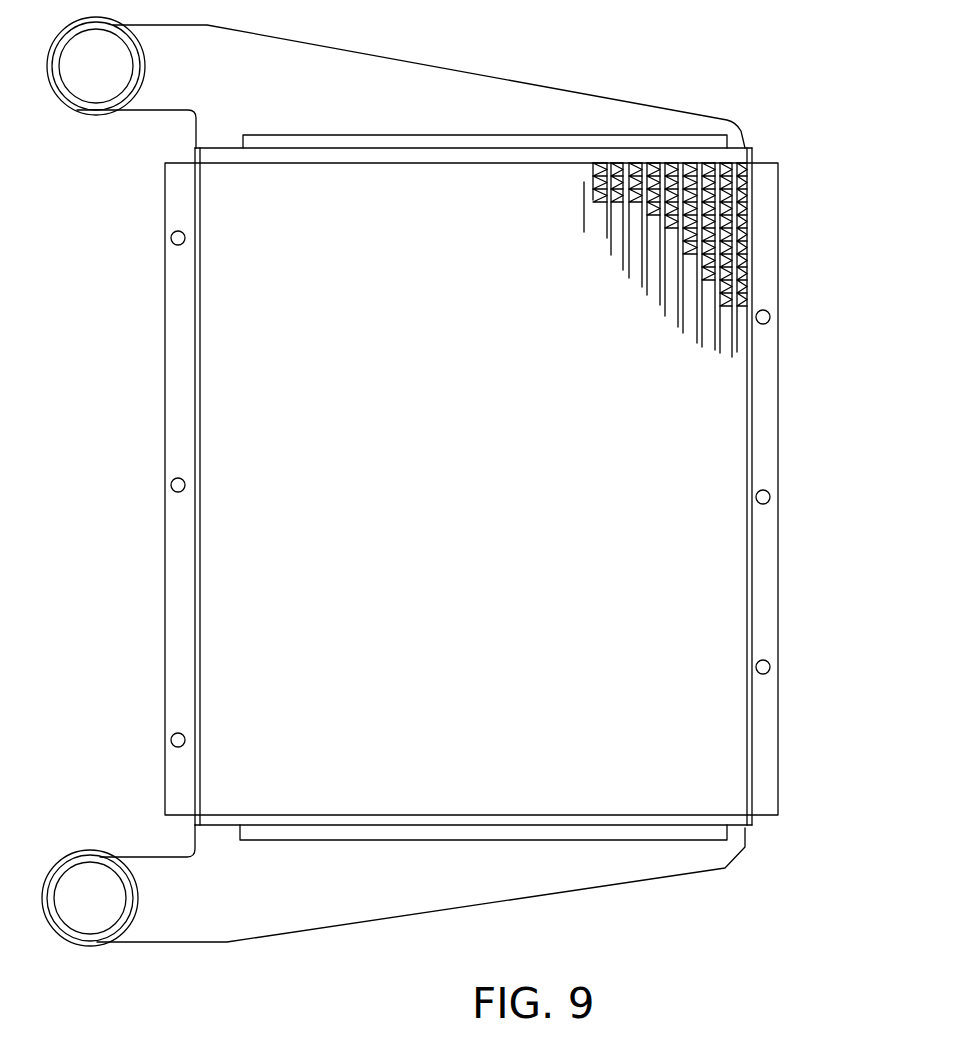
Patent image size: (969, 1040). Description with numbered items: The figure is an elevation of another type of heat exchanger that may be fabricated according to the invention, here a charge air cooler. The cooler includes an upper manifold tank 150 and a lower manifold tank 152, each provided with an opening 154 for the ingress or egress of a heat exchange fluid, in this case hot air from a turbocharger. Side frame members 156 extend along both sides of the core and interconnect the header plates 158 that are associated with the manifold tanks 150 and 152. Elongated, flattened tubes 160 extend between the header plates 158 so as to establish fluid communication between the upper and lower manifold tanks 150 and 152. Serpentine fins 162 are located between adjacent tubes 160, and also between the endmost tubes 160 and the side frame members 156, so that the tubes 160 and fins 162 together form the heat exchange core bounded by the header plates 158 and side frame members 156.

The upper manifold tank 150 is at (432, 85).
The lower manifold tank 152 is at (328, 913).
The opening 154 is at (92, 95).
The side frame member 156 is at (175, 353).
The header plate 158 is at (742, 158).
The flattened tube 160 is at (585, 232).
The serpentine fin 162 is at (720, 228).